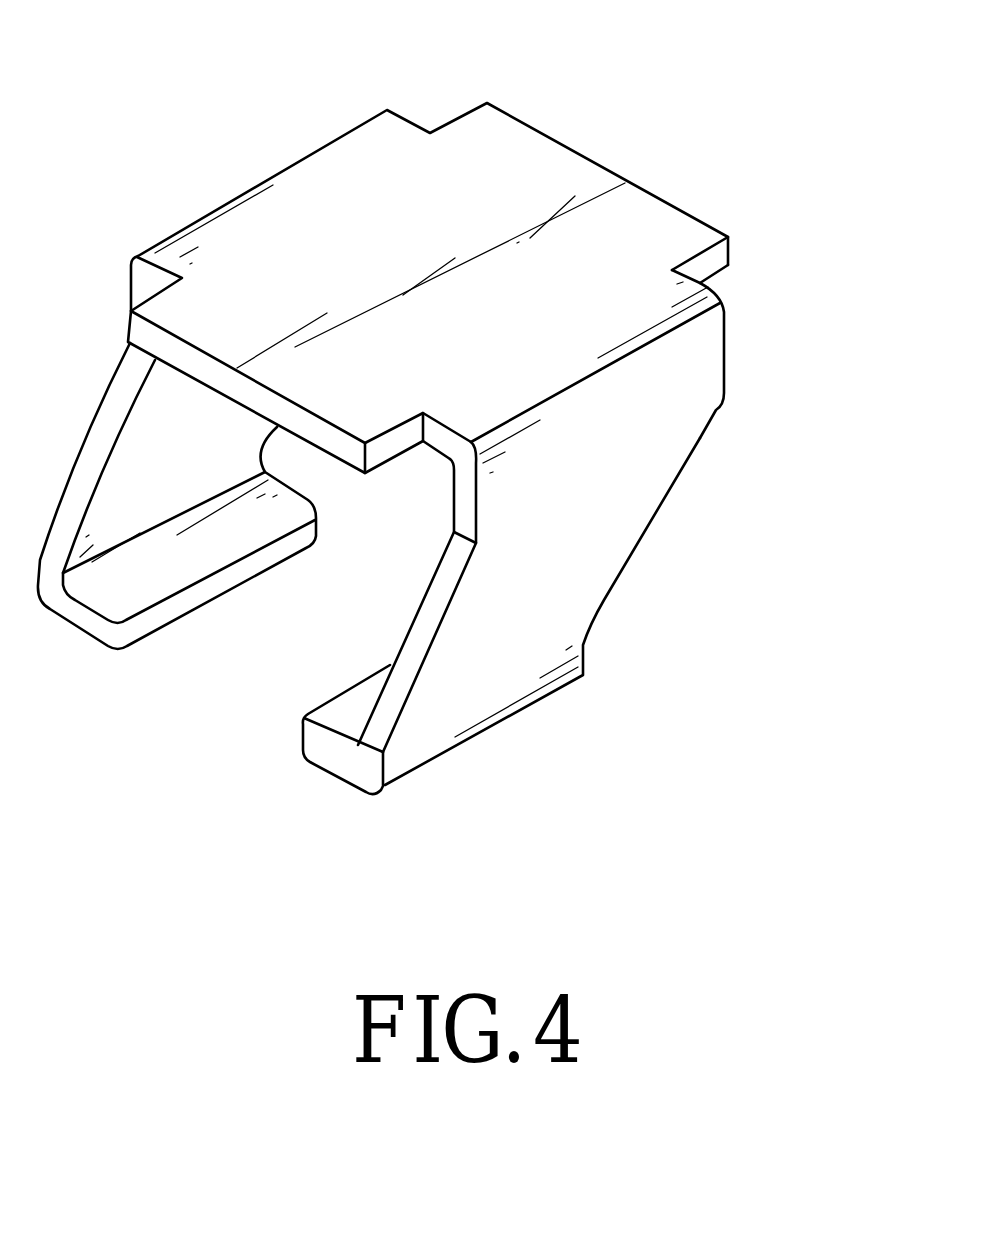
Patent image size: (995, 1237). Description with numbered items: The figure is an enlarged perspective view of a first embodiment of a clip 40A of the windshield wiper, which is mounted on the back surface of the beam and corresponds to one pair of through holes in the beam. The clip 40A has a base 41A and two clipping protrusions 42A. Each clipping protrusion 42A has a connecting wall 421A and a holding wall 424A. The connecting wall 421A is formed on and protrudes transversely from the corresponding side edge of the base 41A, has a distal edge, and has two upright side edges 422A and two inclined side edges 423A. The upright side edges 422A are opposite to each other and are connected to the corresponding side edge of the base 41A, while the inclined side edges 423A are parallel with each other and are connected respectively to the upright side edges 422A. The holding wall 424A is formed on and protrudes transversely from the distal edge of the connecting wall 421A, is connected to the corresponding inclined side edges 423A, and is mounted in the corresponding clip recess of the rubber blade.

The clip 40A is at (585, 97).
The base 41A is at (308, 187).
The clipping protrusion 42A is at (238, 690).
The connecting wall 421A is at (650, 490).
The upright side edge 422A is at (725, 350).
The inclined side edge 423A is at (620, 582).
The holding wall 424A is at (330, 750).